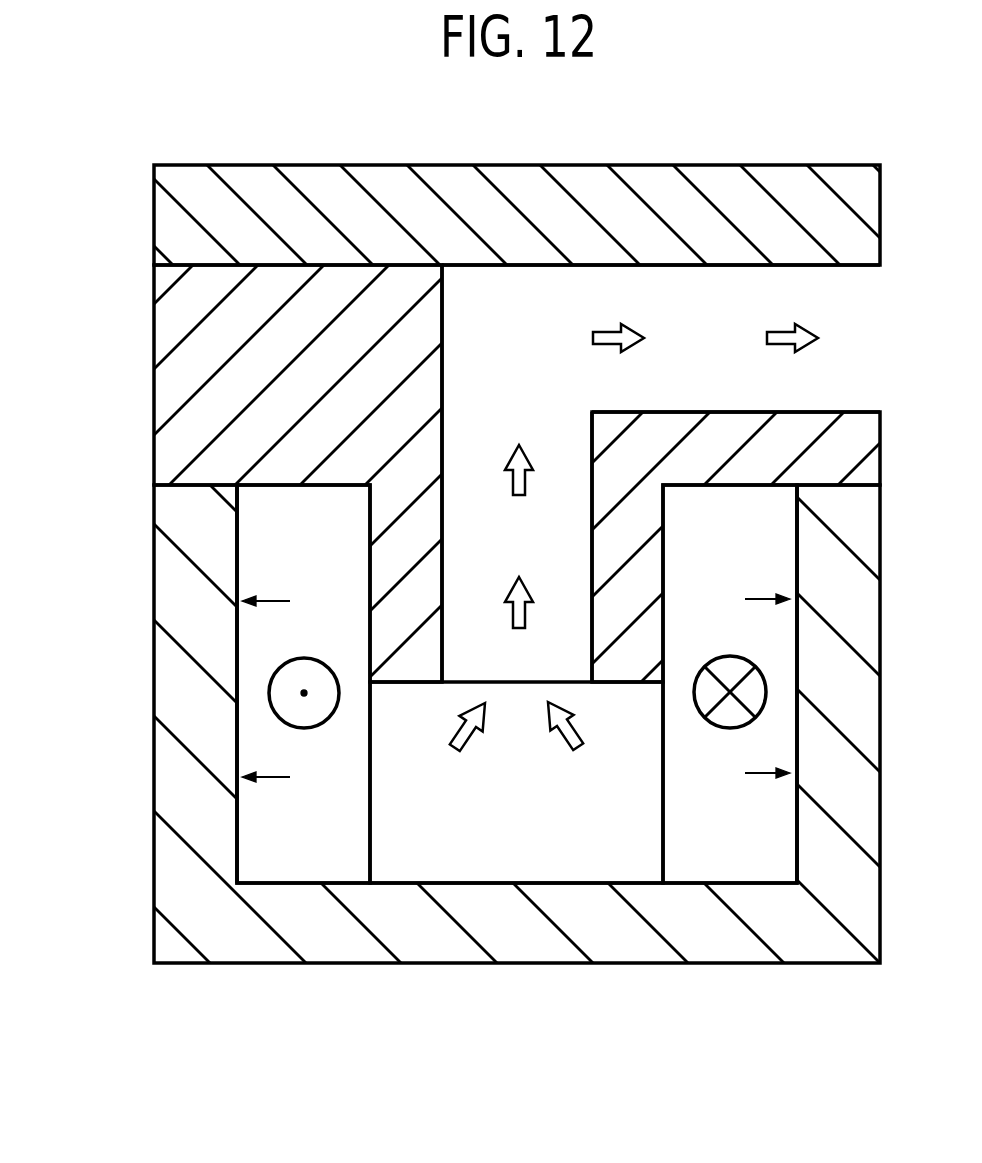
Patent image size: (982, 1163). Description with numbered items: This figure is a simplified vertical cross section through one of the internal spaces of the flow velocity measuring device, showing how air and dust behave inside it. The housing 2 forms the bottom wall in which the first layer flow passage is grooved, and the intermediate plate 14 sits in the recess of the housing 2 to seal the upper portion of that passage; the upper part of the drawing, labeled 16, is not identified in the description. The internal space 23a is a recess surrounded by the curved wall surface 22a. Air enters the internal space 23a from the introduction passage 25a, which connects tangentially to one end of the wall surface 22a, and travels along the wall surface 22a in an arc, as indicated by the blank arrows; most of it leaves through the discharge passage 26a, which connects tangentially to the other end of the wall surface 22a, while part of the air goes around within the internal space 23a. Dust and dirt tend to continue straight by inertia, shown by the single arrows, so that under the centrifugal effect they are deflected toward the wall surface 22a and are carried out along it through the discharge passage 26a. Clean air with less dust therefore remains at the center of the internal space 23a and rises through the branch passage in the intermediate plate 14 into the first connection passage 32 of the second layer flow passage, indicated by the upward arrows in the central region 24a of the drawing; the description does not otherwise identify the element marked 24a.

The housing 2 is at (155, 585).
The intermediate plate 14 is at (155, 352).
The yoke 16 is at (155, 223).
The wall surface 22a is at (237, 565).
The internal space 23a is at (547, 827).
The central passage 24a is at (550, 556).
The introduction passage 25a is at (325, 842).
The discharge passage 26a is at (757, 843).
The first connection passage 32 is at (720, 355).